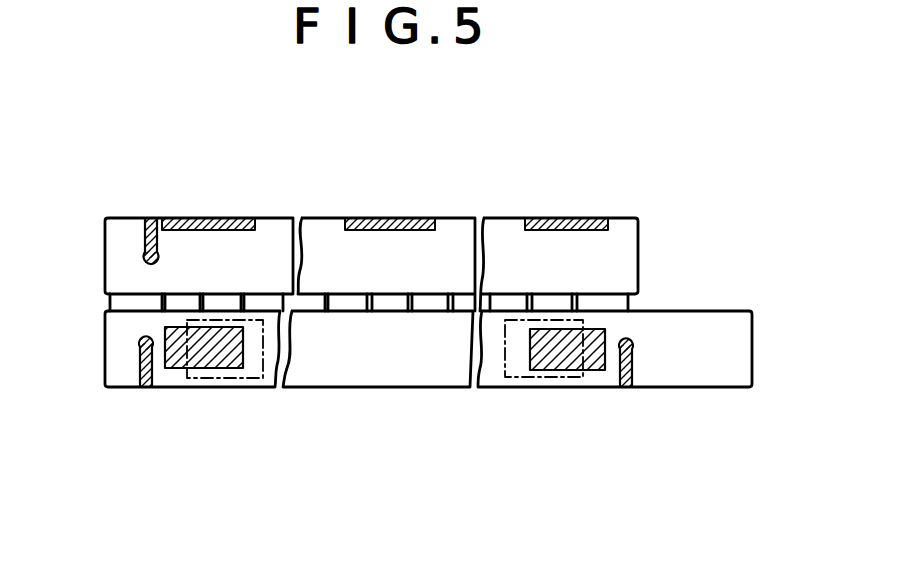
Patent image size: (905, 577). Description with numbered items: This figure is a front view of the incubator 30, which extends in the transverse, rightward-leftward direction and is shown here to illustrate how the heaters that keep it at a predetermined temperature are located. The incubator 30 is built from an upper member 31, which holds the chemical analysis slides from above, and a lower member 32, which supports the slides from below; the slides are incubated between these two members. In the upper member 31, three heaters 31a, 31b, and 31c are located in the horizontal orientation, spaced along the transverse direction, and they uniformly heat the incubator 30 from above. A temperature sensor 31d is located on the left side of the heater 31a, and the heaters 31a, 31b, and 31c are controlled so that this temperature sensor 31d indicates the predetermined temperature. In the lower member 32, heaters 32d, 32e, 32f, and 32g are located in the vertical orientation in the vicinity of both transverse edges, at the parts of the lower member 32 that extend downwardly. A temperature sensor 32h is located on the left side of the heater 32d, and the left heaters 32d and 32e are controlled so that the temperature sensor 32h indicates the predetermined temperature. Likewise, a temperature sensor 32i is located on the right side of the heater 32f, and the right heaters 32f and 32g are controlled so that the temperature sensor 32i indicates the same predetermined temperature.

The incubator 30 is at (621, 201).
The upper member 31 is at (618, 248).
The heater 31a is at (238, 217).
The heater 31b is at (390, 218).
The heater 31c is at (553, 217).
The temperature sensor 31d is at (144, 261).
The lower member 32 is at (725, 370).
The heater 32d is at (203, 357).
The heater 32e is at (245, 378).
The heater 32f is at (568, 363).
The heater 32g is at (520, 387).
The temperature sensor 32h is at (140, 343).
The temperature sensor 32i is at (631, 346).